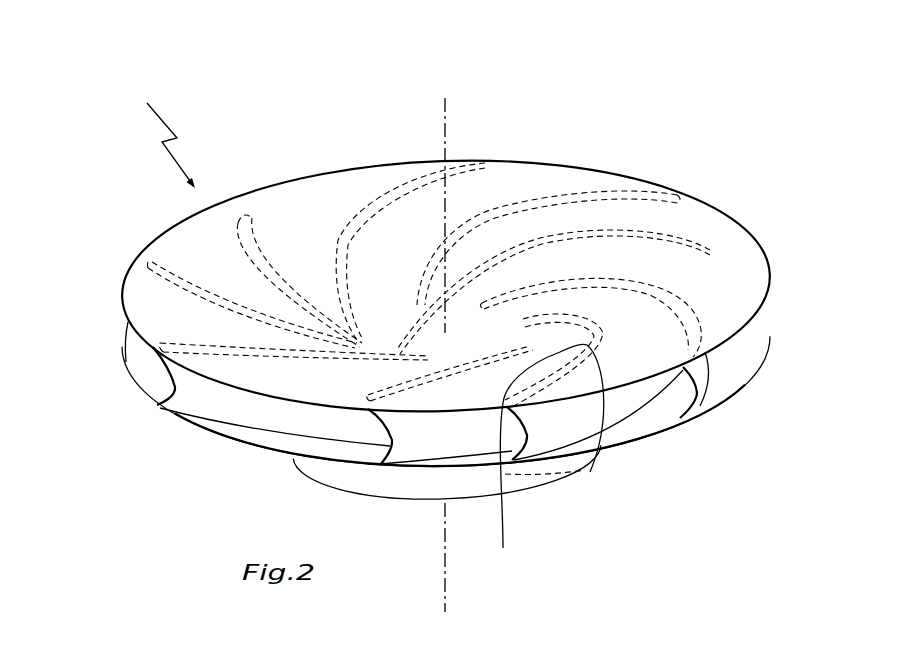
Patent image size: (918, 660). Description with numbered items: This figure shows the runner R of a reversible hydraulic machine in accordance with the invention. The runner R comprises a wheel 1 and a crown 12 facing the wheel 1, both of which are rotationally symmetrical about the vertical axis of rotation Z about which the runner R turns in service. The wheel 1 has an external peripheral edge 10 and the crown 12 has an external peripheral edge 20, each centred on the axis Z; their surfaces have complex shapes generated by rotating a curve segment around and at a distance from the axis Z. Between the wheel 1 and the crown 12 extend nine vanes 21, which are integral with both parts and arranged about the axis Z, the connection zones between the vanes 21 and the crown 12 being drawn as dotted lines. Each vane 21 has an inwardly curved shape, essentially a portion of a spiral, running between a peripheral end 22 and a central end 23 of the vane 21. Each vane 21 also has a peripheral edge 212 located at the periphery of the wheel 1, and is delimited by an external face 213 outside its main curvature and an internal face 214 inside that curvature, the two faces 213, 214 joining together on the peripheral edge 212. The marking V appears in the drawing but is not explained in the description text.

The wheel 1 is at (748, 338).
The external peripheral edge 10 is at (117, 367).
The crown 12 is at (745, 280).
The external peripheral edge 20 is at (113, 296).
The vane 21 is at (198, 391).
The peripheral edge 212 is at (158, 373).
The external face 213 is at (583, 226).
The internal face 214 is at (624, 245).
The peripheral end 22 is at (670, 241).
The central end 23 is at (427, 300).
The runner R is at (164, 137).
The axis of rotation Z is at (435, 349).
The hub V is at (541, 485).